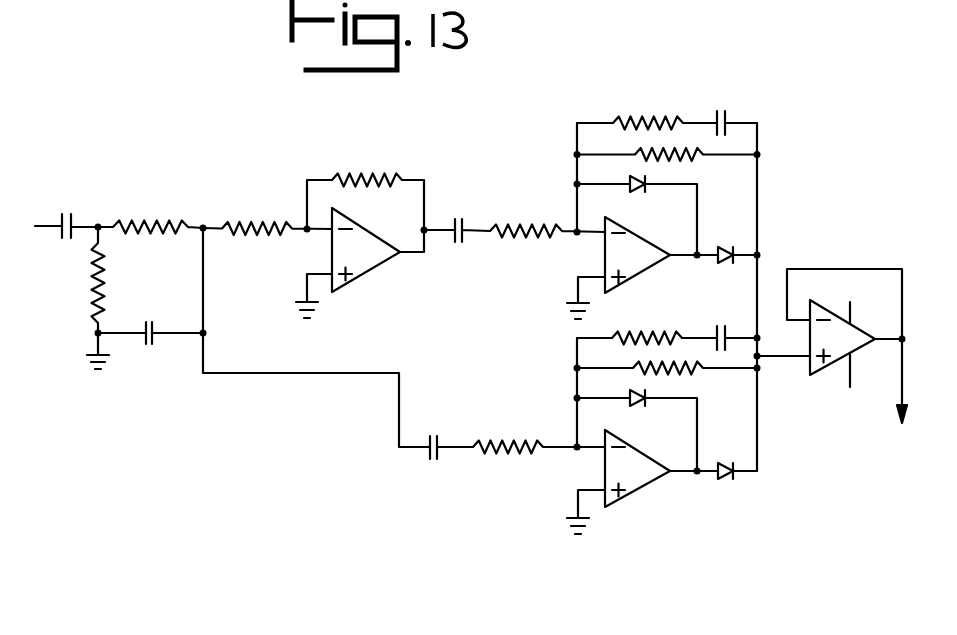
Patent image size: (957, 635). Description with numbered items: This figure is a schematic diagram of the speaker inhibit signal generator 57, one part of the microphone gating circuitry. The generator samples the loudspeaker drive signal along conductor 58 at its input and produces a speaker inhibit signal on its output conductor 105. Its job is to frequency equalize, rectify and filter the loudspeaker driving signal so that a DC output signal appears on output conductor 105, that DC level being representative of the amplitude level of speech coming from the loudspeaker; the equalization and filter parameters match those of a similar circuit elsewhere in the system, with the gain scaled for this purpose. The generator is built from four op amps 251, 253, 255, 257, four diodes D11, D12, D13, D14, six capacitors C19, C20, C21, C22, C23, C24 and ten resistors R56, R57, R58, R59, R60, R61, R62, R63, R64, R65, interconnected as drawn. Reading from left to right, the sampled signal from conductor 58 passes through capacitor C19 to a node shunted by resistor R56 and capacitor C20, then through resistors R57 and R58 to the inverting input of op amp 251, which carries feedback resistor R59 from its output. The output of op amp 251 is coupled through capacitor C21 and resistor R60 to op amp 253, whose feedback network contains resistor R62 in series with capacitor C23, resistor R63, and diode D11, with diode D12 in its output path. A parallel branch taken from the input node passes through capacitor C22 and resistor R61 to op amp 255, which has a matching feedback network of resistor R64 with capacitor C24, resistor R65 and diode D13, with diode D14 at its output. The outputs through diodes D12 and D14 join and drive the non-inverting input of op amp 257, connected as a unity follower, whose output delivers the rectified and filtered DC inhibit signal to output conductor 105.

The conductor 58 is at (50, 226).
The speaker inhibit signal generator 57 is at (365, 148).
The op amp 251 is at (366, 266).
The op amp 253 is at (645, 268).
The op amp 255 is at (645, 484).
The op amp 257 is at (839, 358).
The output conductor 105 is at (902, 377).
The capacitor C19 is at (76, 216).
The capacitor C20 is at (150, 323).
The capacitor C21 is at (457, 219).
The capacitor C22 is at (442, 434).
The capacitor C23 is at (731, 115).
The capacitor C24 is at (730, 327).
The resistor R56 is at (82, 298).
The resistor R57 is at (150, 215).
The resistor R58 is at (267, 217).
The resistor R59 is at (365, 205).
The resistor R60 is at (547, 221).
The resistor R61 is at (539, 434).
The resistor R62 is at (647, 113).
The resistor R63 is at (667, 146).
The resistor R64 is at (647, 327).
The resistor R65 is at (667, 359).
The diode D11 is at (637, 209).
The diode D12 is at (735, 244).
The diode D13 is at (637, 425).
The diode D14 is at (735, 460).